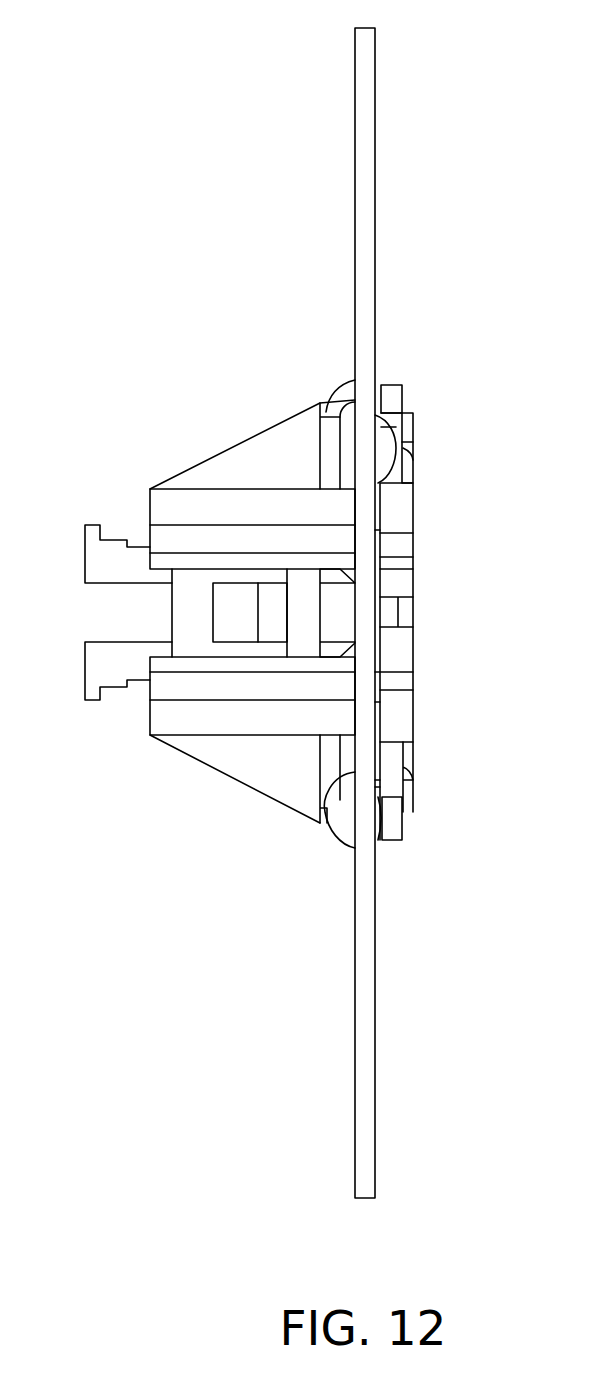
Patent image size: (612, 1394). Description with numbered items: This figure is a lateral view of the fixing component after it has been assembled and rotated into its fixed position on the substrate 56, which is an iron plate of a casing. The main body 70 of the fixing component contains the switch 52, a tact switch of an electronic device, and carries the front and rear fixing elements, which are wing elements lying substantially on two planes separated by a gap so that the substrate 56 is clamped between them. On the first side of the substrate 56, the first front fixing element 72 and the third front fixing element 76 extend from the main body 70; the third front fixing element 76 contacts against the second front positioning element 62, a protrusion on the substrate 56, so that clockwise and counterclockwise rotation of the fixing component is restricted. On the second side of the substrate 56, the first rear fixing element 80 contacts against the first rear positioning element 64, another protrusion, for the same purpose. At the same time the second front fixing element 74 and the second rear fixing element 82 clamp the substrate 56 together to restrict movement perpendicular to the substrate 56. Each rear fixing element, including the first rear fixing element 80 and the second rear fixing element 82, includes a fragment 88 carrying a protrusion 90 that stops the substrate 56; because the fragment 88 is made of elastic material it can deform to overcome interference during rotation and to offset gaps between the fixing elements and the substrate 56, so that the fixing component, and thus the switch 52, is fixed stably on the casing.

The substrate 56 is at (375, 90).
The main body 70 is at (162, 505).
The switch 52 is at (98, 560).
The first front fixing element 72 is at (326, 411).
The third front fixing element 76 is at (330, 755).
The second front positioning element 62 is at (343, 828).
The second front fixing element 74 is at (338, 600).
The first rear positioning element 64 is at (383, 460).
The fragment 88 is at (388, 392).
The protrusion 90 is at (378, 413).
The first rear fixing element 80 is at (462, 322).
The second rear fixing element 82 is at (485, 882).